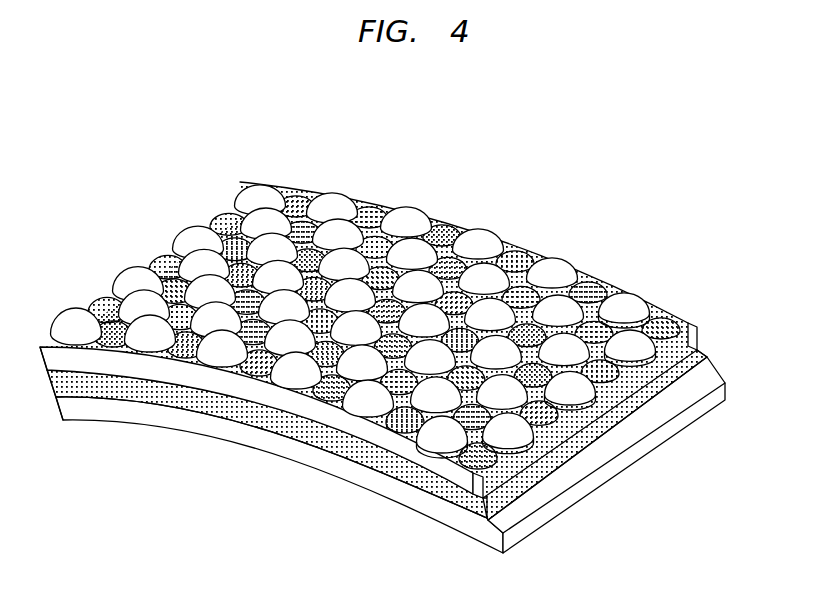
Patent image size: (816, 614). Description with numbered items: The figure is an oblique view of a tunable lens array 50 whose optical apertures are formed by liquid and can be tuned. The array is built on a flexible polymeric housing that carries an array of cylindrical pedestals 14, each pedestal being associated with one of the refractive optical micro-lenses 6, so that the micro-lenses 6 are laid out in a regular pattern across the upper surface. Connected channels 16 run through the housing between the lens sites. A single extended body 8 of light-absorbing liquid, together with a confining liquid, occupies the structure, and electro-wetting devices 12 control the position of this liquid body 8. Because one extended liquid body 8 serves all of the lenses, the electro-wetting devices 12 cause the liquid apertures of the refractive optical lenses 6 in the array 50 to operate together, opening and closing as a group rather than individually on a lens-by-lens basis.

The refractive optical micro-lens 6 is at (192, 286).
The single extended body of light-absorbing liquid 8 is at (378, 240).
The electro-wetting device 12 is at (713, 388).
The cylindrical pedestal 14 is at (680, 383).
The channel 16 is at (511, 237).
The lens array 50 is at (630, 165).